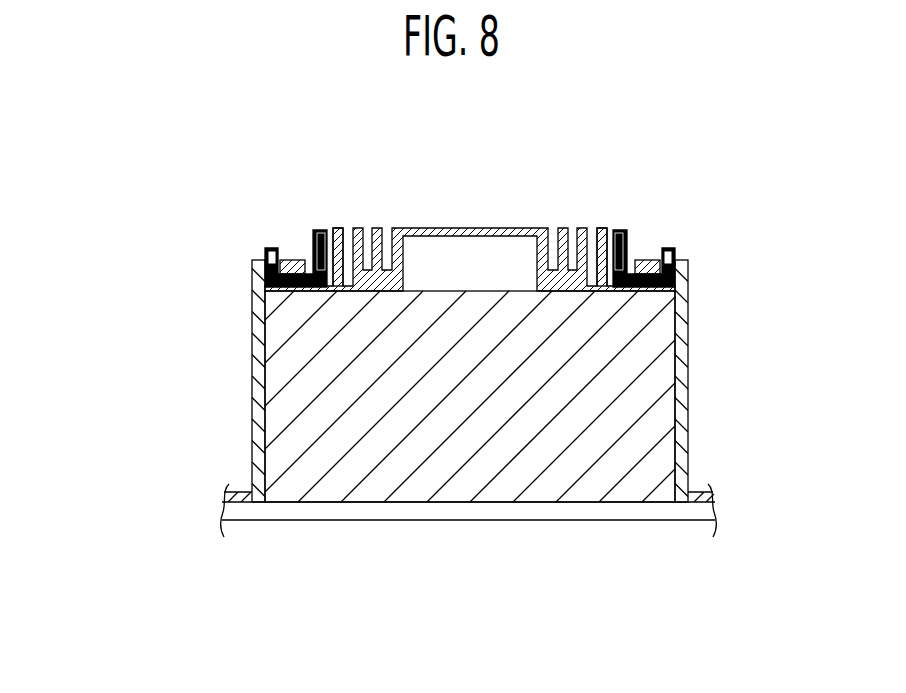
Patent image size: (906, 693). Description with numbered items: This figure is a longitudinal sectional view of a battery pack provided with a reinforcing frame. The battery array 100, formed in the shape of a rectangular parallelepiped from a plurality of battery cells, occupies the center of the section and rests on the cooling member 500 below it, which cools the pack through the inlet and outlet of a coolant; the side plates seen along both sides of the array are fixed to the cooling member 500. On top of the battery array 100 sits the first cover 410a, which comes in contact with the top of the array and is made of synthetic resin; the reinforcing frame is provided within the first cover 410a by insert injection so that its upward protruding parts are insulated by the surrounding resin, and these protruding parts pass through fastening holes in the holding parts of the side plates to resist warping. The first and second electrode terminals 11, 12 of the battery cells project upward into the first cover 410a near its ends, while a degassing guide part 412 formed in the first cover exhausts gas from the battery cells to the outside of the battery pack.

The first electrode terminal 11 is at (347, 228).
The second electrode terminal 12 is at (626, 245).
The first cover 410a is at (375, 214).
The degassing guide part 412 is at (470, 228).
The battery array 100 is at (655, 460).
The cooling member 500 is at (645, 512).